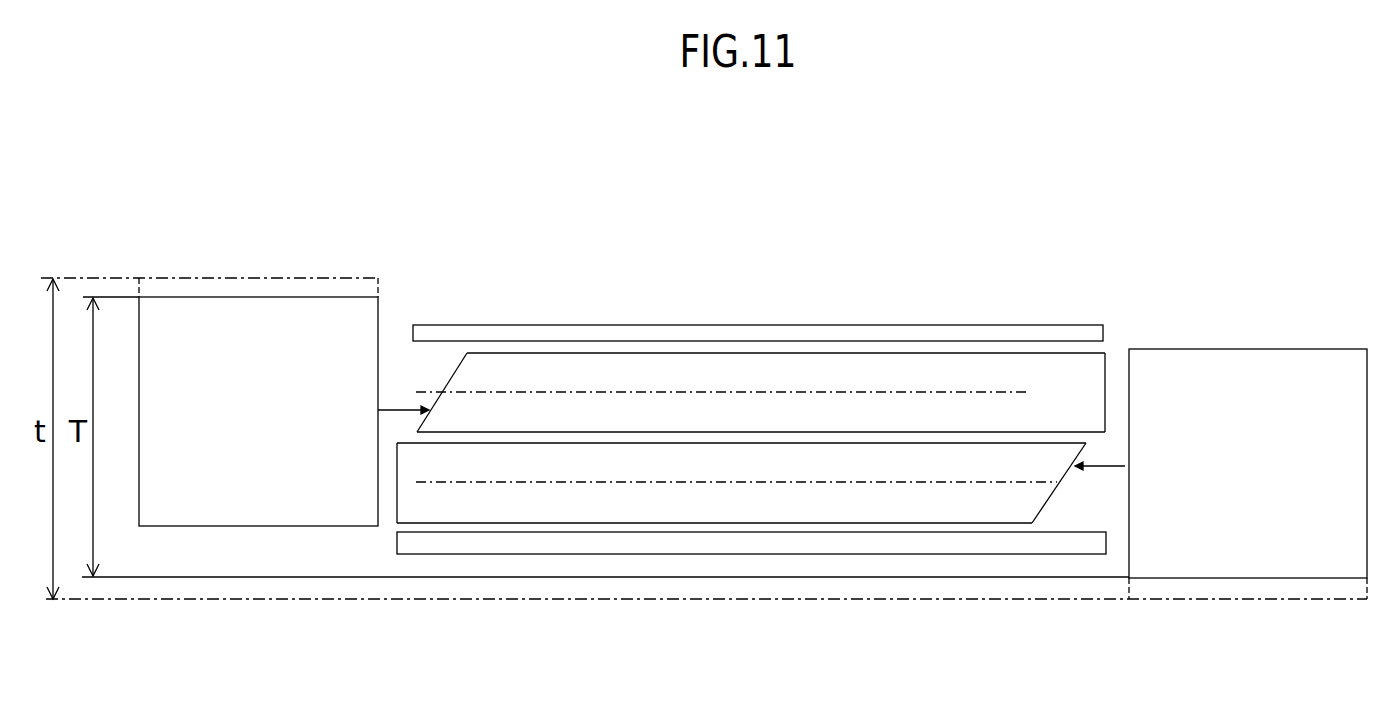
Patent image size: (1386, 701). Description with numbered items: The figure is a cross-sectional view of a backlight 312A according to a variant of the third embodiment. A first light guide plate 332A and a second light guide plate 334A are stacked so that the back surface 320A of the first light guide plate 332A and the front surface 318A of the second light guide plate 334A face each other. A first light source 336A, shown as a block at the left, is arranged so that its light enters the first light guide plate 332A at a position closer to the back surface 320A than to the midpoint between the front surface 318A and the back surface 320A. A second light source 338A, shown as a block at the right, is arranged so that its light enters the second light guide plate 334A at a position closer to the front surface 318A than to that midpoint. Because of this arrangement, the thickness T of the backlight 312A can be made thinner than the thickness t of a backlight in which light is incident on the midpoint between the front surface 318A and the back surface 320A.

The backlight 312A is at (1153, 313).
The front surface 318A is at (695, 352).
The back surface 320A is at (550, 433).
The first light guide plate 332A is at (557, 368).
The second light guide plate 334A is at (1035, 513).
The first light source 336A is at (229, 428).
The second light source 338A is at (1219, 478).